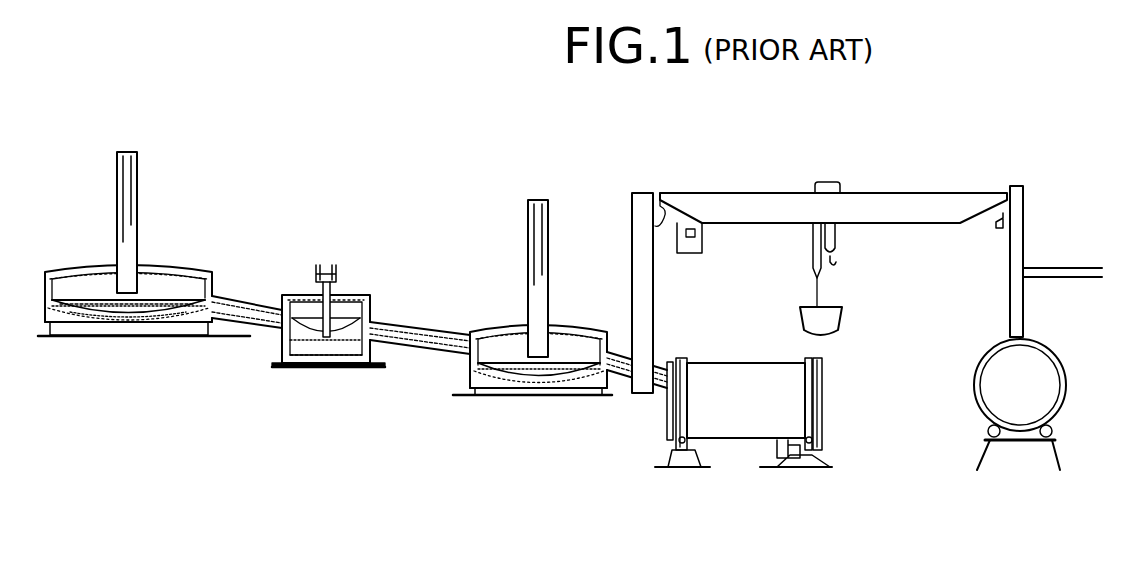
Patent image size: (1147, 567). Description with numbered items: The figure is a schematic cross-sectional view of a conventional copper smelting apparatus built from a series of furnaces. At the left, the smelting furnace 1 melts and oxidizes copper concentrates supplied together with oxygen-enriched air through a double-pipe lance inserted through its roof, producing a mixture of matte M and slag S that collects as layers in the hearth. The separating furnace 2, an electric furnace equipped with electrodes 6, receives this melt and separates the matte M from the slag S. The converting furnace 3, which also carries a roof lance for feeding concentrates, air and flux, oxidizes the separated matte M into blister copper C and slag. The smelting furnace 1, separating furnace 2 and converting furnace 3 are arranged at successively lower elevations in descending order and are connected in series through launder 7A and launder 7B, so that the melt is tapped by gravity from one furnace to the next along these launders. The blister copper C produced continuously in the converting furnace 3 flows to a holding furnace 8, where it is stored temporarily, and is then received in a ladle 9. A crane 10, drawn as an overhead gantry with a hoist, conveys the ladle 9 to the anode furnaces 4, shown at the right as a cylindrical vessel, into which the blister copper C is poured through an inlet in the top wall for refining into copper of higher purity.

The smelting furnace 1 is at (204, 258).
The separating furnace 2 is at (346, 292).
The converting furnace 3 is at (512, 318).
The anode furnace 4 is at (1064, 357).
The electrodes 6 is at (323, 262).
The launder 7A is at (252, 296).
The launder 7B is at (416, 320).
The holding furnace 8 is at (732, 446).
The ladle 9 is at (838, 300).
The crane 10 is at (857, 184).
The blister copper C is at (660, 372).
The slag S is at (150, 306).
The matte M is at (150, 332).